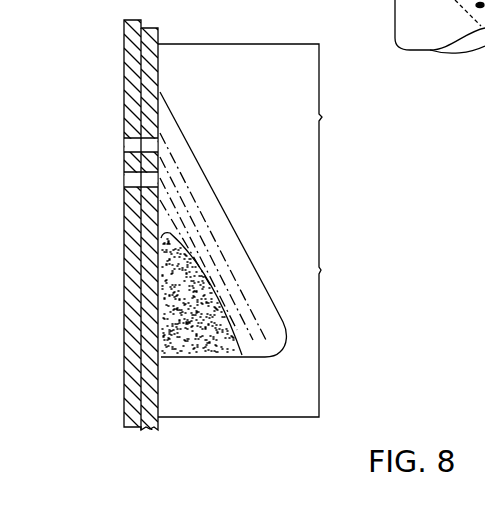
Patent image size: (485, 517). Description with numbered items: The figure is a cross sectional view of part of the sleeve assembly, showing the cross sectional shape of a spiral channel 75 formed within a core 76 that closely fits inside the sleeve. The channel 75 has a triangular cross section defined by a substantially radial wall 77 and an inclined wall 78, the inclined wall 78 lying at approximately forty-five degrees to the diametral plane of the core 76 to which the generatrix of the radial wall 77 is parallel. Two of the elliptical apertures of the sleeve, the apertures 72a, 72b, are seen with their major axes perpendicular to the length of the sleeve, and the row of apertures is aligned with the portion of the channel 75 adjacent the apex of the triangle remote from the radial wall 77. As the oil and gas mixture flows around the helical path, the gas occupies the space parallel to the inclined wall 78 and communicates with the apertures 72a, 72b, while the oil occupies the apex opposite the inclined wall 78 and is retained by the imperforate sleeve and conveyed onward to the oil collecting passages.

The aperture 72a is at (132, 146).
The aperture 72b is at (132, 178).
The channel 75 is at (221, 218).
The core 76 is at (271, 190).
The radial wall 77 is at (201, 354).
The inclined wall 78 is at (267, 298).